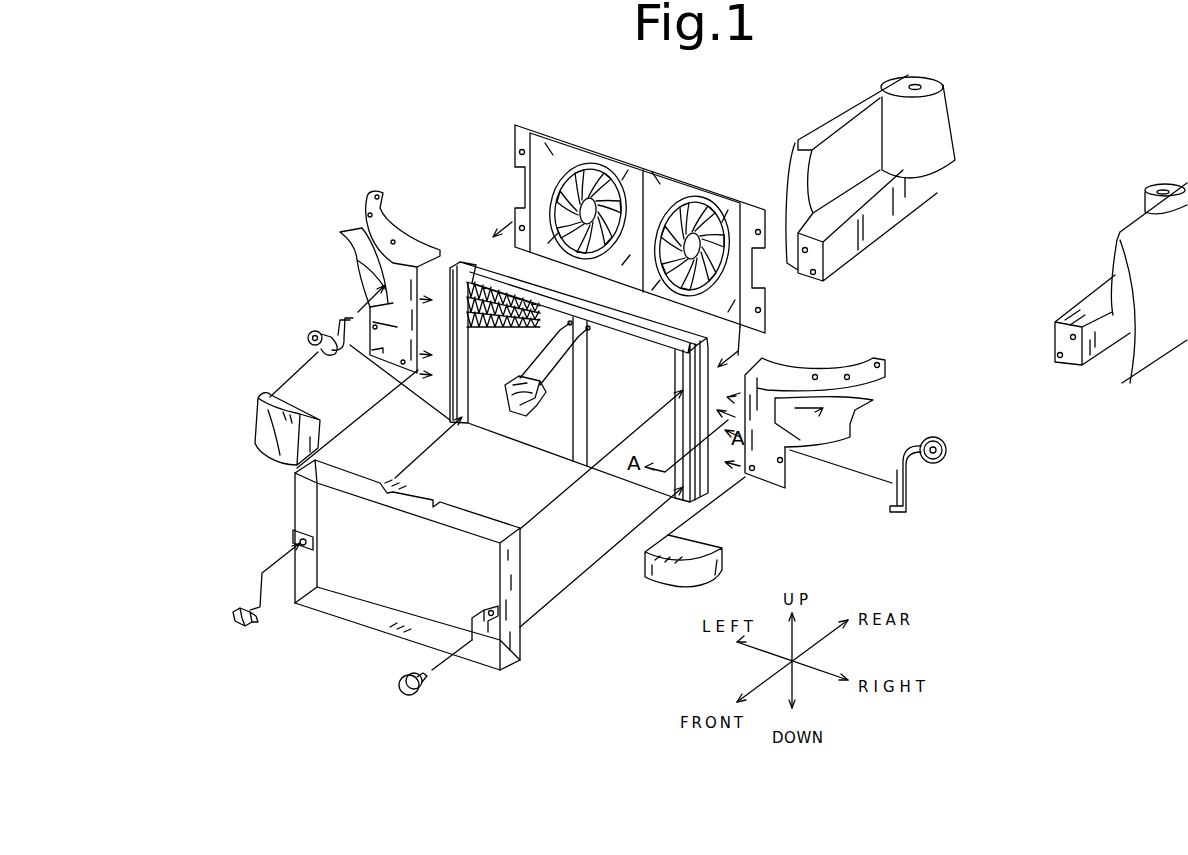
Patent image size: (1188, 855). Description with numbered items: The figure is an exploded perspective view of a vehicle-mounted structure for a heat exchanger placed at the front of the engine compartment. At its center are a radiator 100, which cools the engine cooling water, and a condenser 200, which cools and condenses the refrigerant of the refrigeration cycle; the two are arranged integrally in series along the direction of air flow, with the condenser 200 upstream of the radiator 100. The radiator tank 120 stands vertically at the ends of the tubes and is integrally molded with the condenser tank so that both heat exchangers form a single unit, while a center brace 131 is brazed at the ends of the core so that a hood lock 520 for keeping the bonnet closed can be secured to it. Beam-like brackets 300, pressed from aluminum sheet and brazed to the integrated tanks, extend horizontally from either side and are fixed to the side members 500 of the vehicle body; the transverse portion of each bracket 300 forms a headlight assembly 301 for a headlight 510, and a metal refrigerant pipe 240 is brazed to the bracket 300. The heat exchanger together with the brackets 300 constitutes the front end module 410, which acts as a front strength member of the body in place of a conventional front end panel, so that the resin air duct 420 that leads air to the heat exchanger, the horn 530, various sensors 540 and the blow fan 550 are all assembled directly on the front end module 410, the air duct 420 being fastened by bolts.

The radiator 100 is at (483, 263).
The condenser 200 is at (463, 262).
The radiator tank 120 is at (720, 390).
The center brace 131 is at (577, 442).
The refrigerant pipe 240 is at (313, 333).
The bracket 300 is at (405, 237).
The headlight assembly 301 is at (345, 230).
The front end module 410 is at (675, 511).
The air duct 420 is at (510, 660).
The side member 500 is at (1093, 366).
The headlight 510 is at (262, 442).
The hood lock 520 is at (508, 413).
The horn 530 is at (408, 700).
The sensor 540 is at (237, 628).
The blow fan 550 is at (723, 200).